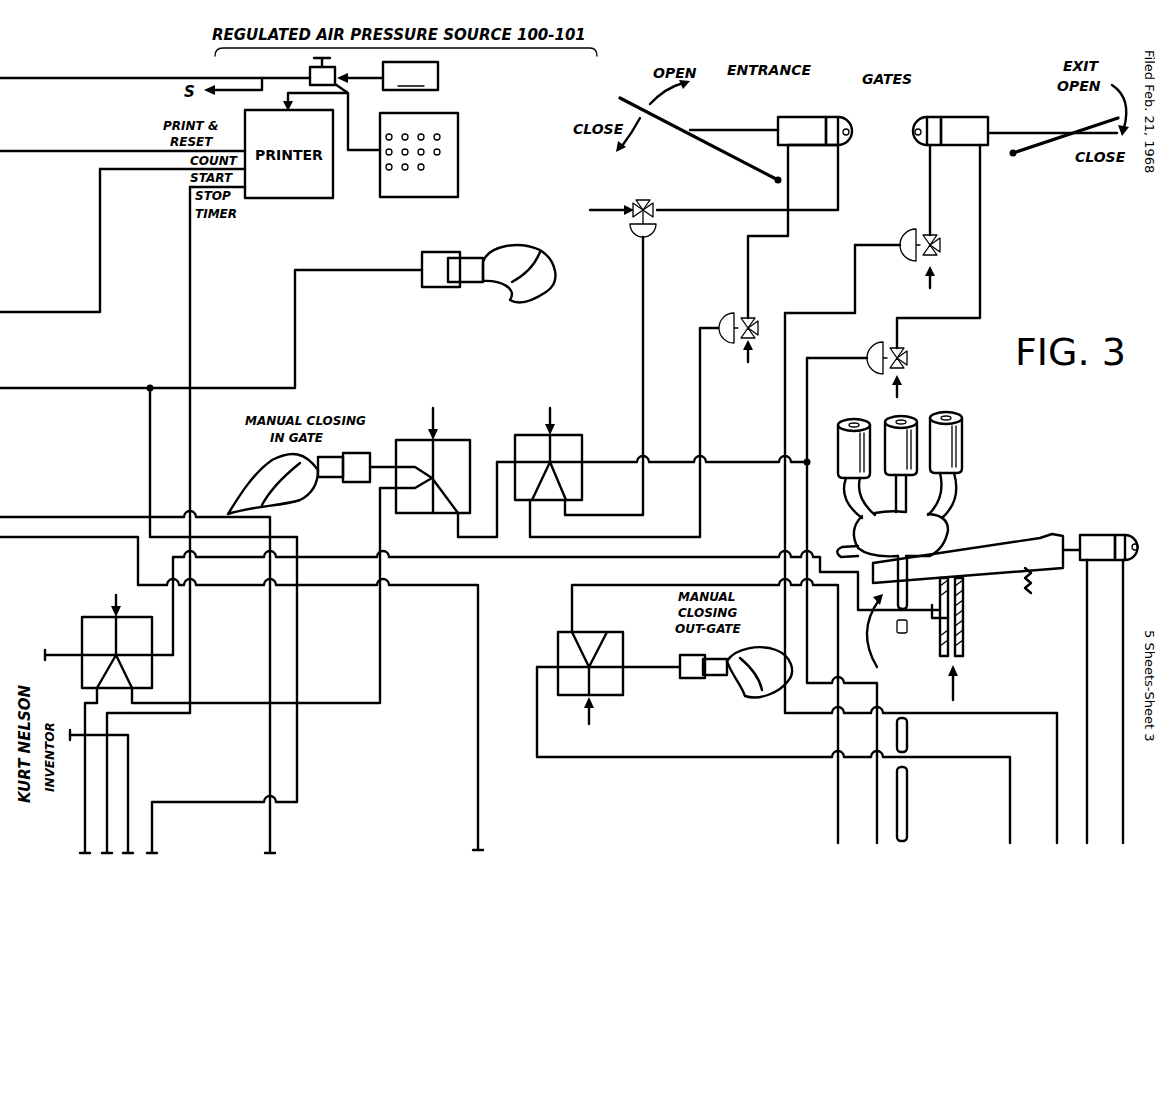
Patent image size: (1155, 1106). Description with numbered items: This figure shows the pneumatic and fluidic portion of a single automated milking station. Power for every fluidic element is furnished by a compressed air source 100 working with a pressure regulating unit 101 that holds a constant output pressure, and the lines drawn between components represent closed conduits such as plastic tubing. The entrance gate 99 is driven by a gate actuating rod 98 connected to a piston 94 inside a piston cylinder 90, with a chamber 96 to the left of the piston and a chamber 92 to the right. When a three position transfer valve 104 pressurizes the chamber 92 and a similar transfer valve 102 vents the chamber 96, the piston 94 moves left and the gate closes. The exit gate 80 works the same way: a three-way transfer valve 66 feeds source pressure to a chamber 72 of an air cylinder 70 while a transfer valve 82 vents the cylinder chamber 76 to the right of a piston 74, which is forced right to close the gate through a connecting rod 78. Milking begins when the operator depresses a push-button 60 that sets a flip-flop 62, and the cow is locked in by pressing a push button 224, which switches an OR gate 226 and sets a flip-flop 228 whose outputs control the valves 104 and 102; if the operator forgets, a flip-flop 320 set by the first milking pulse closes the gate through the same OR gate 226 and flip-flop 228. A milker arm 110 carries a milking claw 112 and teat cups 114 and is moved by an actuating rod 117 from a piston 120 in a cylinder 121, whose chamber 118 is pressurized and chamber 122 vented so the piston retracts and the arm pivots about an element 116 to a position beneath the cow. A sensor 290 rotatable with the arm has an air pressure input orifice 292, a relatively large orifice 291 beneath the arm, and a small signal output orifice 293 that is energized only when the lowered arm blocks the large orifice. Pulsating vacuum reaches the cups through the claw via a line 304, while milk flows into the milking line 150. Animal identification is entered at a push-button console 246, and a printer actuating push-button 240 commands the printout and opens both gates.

The compressed air source 100 is at (452, 72).
The pressure regulating unit 101 is at (312, 70).
The push-button console 246 is at (458, 150).
The printer actuating push-button 240 is at (452, 254).
The three position transfer valve 104 is at (630, 205).
The entrance gate 99 is at (673, 128).
The gate actuating rod 98 is at (727, 128).
The piston cylinder 90 is at (808, 117).
The chamber 92 is at (842, 121).
The piston 94 is at (848, 143).
The chamber 96 is at (814, 135).
The chamber 72 is at (915, 117).
The air cylinder 70 is at (958, 117).
The piston 74 is at (940, 146).
The cylinder chamber 76 is at (995, 117).
The connecting rod 78 is at (1025, 128).
The exit gate 80 is at (1090, 124).
The three-way transfer valve 66 is at (939, 246).
The transfer valve 102 is at (738, 316).
The transfer valve 82 is at (905, 353).
The teat cups 114 is at (893, 443).
The milking claw 112 is at (942, 515).
The pulsating vacuum line 304 is at (851, 545).
The milker arm 110 is at (1012, 542).
The chamber 118 is at (1086, 535).
The cylinder 121 is at (1124, 530).
The chamber 122 is at (1129, 535).
The piston 120 is at (1120, 561).
The actuating rod 117 is at (1068, 556).
The element 116 is at (1032, 594).
The large orifice 291 is at (958, 585).
The sensor 290 is at (983, 643).
The air pressure input orifice 292 is at (962, 656).
The signal output orifice 293 is at (935, 620).
The milking line 150 is at (893, 698).
The OR gate 226 is at (445, 441).
The push button 224 is at (330, 476).
The flip-flop 228 is at (592, 424).
The flip-flop 320 is at (97, 616).
The flip-flop 62 is at (627, 648).
The push-button 60 is at (700, 680).